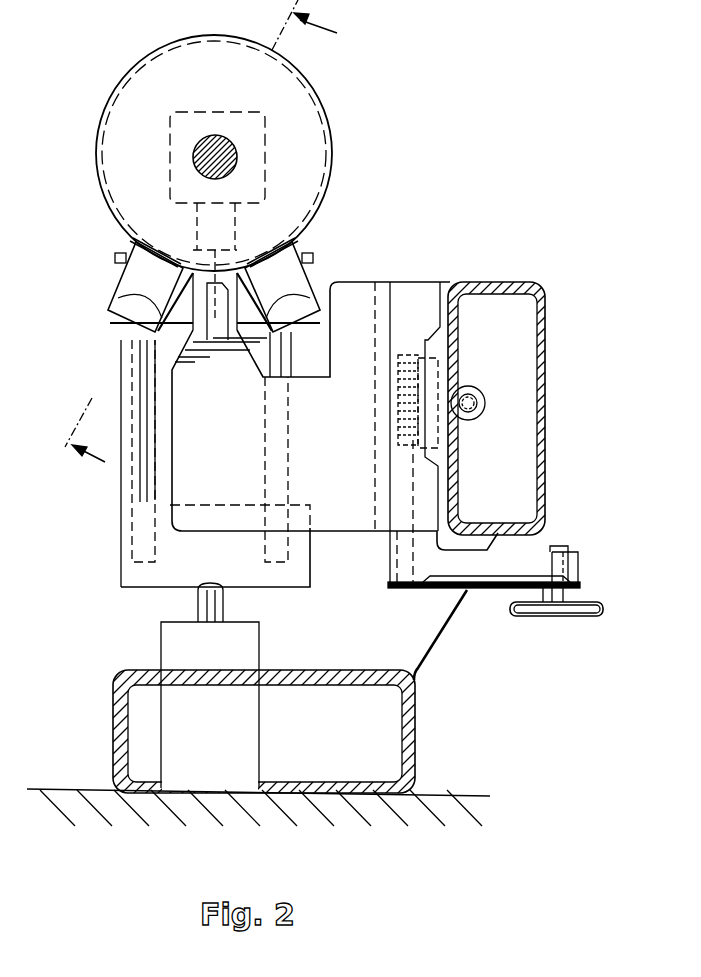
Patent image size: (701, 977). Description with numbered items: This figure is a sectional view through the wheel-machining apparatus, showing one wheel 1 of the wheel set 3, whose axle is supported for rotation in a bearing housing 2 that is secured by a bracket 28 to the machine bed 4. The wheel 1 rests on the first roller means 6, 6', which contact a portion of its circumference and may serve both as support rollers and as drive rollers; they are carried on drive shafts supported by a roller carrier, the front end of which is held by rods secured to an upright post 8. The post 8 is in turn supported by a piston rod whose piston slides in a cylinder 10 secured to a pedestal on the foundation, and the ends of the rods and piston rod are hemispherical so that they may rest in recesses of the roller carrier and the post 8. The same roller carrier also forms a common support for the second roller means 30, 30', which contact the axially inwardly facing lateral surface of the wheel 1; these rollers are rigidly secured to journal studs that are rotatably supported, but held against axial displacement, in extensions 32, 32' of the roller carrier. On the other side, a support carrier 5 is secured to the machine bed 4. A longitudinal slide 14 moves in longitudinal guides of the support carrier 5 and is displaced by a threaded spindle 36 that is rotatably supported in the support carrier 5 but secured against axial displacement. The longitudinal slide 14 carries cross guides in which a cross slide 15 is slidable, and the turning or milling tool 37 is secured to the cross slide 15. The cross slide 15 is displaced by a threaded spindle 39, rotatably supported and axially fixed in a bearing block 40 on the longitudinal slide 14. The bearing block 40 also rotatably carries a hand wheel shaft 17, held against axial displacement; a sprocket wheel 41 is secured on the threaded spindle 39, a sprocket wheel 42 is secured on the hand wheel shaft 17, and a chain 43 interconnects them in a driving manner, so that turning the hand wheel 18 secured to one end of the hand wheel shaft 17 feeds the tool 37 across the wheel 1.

The wheel 1 is at (135, 137).
The bearing housing 2 is at (180, 155).
The wheel set 3 is at (186, 163).
The bracket 28 is at (213, 223).
The second roller means 30 is at (306, 237).
The second roller means 30' is at (115, 252).
The extension of the roller carrier 32 is at (305, 282).
The extension of the roller carrier 32' is at (106, 287).
The first roller means 6 is at (225, 244).
The first roller means 6' is at (190, 302).
The turning or milling tool 37 is at (120, 343).
The cross slide 15 is at (350, 317).
The support carrier 5 is at (545, 355).
The longitudinal slide 14 is at (413, 340).
The threaded spindle 36 is at (485, 403).
The threaded spindle 39 is at (440, 452).
The bearing block 40 is at (500, 565).
The hand wheel shaft 17 is at (557, 570).
The sprocket wheel 42 is at (585, 585).
The hand wheel 18 is at (590, 610).
The sprocket wheel 41 is at (403, 590).
The chain 43 is at (468, 592).
The upright post 8 is at (128, 572).
The cylinder 10 is at (175, 640).
The machine bed 4 is at (140, 673).